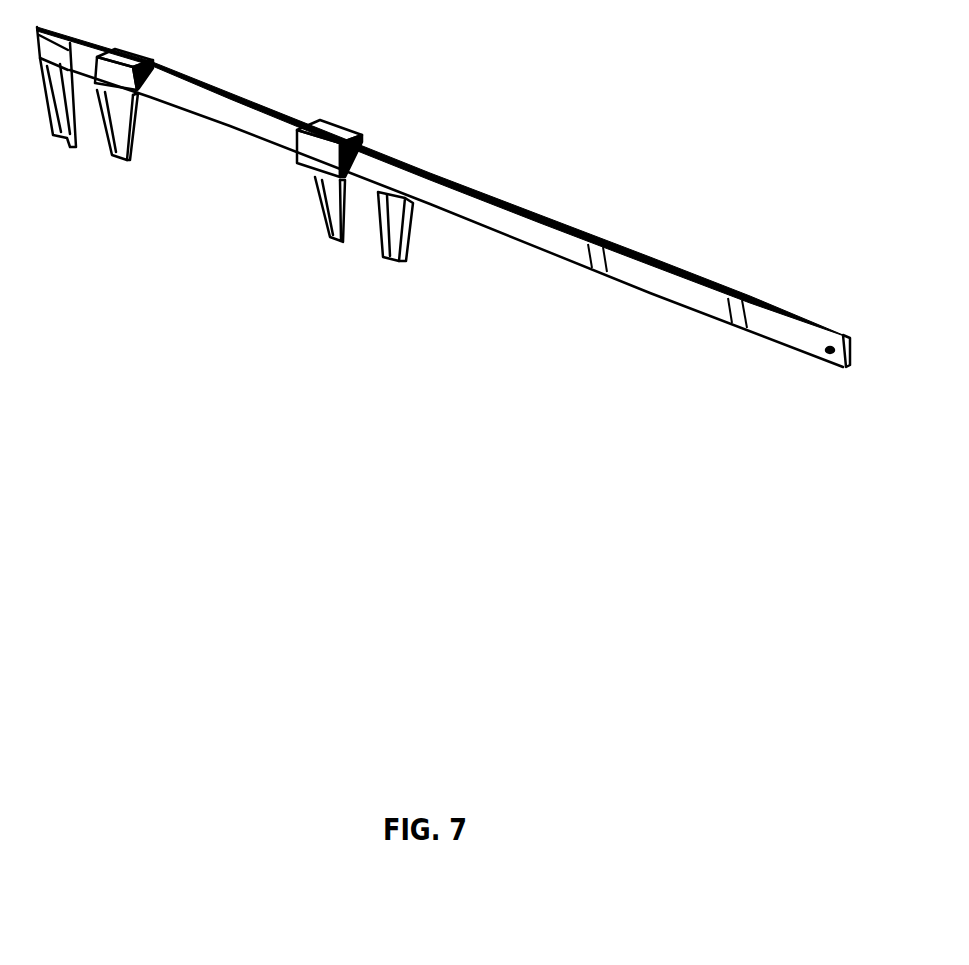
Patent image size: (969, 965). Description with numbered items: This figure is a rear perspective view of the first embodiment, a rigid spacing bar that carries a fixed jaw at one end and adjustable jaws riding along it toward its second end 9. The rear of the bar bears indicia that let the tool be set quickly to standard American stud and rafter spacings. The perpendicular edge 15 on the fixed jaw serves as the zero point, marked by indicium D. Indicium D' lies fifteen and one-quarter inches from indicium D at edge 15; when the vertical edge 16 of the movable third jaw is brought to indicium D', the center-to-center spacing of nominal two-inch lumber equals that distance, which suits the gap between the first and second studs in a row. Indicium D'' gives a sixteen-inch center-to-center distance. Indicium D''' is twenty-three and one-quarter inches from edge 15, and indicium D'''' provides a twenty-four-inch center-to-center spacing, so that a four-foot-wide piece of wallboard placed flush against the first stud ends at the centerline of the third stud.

The second end 9 is at (845, 367).
The perpendicular edge 15 is at (70, 128).
The vertical edge 16 is at (335, 242).
The indicium D is at (136, 180).
The indicium D' is at (539, 306).
The indicium D'' is at (584, 322).
The indicium D''' is at (680, 356).
The indicium D'''' is at (724, 377).